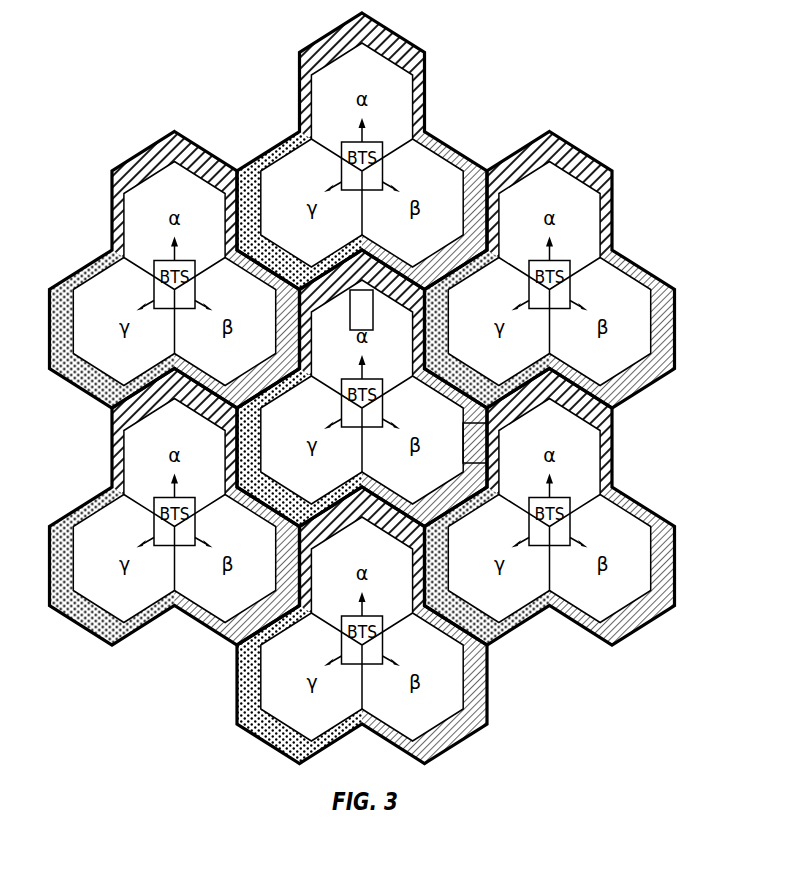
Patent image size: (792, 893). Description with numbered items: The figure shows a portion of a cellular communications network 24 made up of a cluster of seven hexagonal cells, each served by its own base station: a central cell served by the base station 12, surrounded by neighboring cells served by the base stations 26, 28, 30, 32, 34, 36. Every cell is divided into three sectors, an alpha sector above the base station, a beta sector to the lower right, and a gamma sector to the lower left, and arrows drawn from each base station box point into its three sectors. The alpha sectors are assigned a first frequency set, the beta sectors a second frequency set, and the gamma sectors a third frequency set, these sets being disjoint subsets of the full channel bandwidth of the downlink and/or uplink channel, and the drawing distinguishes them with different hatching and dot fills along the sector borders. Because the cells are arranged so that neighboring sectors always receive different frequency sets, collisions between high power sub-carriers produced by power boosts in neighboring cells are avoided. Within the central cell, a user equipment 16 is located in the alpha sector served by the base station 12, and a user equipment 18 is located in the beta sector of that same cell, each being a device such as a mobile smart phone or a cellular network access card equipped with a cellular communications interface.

The cellular communications network 24 is at (668, 72).
The base station 12 is at (371, 422).
The base station 26 is at (371, 185).
The base station 28 is at (558, 304).
The base station 30 is at (558, 540).
The base station 32 is at (371, 659).
The base station 34 is at (184, 540).
The base station 36 is at (184, 304).
The user equipment 16 is at (370, 326).
The user equipment 18 is at (484, 459).